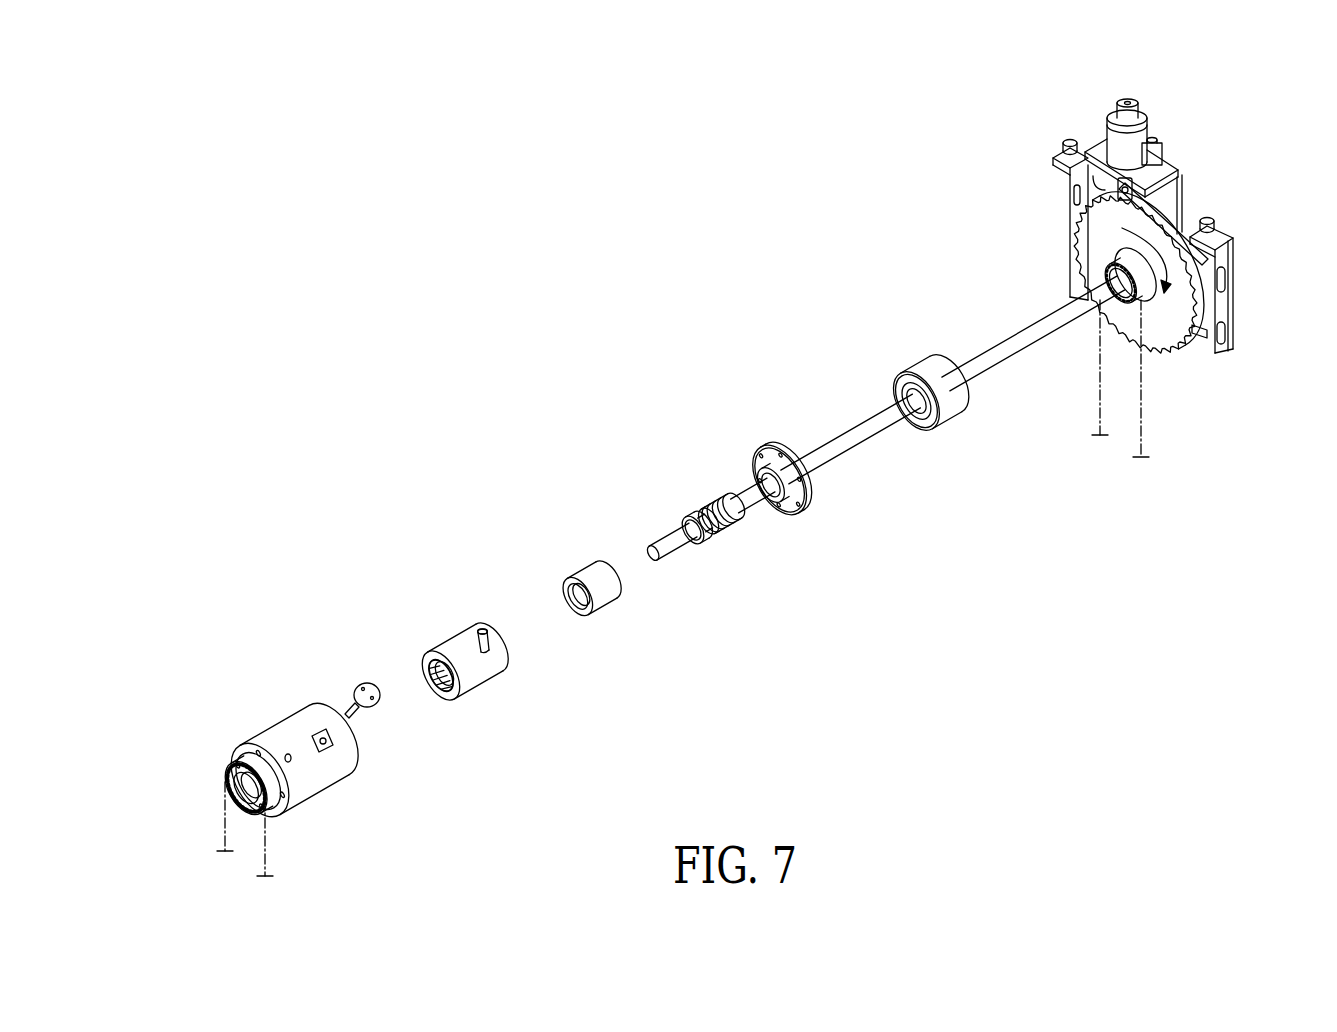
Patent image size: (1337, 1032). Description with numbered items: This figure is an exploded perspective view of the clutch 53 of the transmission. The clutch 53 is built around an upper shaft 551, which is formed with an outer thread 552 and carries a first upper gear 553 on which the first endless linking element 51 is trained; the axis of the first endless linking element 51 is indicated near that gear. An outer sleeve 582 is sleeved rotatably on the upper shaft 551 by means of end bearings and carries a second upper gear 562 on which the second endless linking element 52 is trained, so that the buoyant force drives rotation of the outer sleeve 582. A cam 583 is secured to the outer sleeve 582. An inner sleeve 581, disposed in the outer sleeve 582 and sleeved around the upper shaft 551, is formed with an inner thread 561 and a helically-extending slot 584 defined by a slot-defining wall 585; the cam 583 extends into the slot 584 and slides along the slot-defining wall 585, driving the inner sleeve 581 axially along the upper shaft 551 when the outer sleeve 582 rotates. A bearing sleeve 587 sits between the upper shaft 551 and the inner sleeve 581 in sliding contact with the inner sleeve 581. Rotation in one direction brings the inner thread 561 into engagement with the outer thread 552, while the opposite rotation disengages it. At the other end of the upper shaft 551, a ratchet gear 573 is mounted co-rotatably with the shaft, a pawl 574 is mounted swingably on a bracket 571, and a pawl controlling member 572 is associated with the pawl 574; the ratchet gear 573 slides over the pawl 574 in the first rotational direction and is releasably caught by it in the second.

The first endless linking element 51 is at (1142, 425).
The second endless linking element 52 is at (268, 836).
The clutch 53 is at (968, 219).
The upper shaft 551 is at (865, 419).
The outer thread 552 is at (716, 500).
The first upper gear 553 is at (1128, 304).
The inner thread 561 is at (444, 698).
The second upper gear 562 is at (227, 789).
The bracket 571 is at (1237, 295).
The pawl controlling member 572 is at (1106, 133).
The ratchet gear 573 is at (1160, 346).
The pawl 574 is at (1150, 200).
The inner sleeve 581 is at (450, 638).
The outer sleeve 582 is at (287, 716).
The cam 583 is at (355, 702).
The helically-extending slot 584 is at (489, 643).
The slot-defining wall 585 is at (482, 628).
The bearing sleeve 587 is at (591, 563).